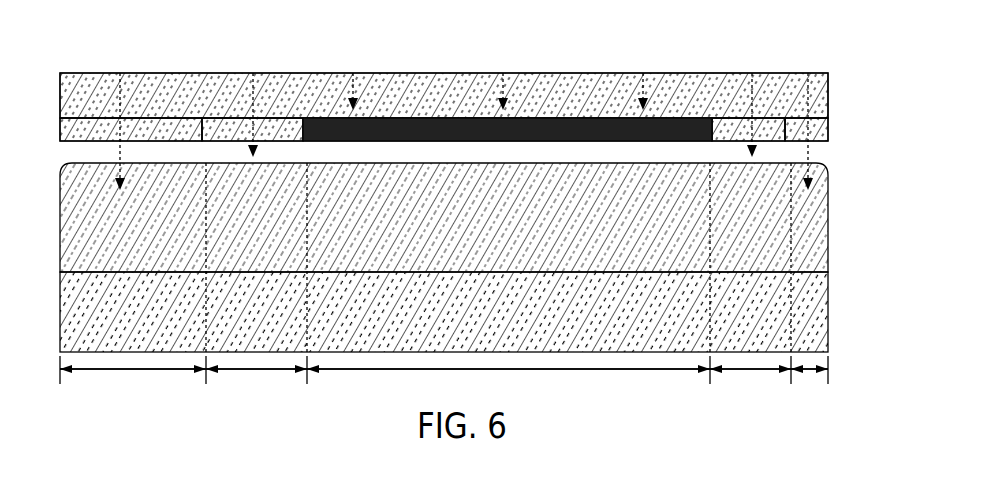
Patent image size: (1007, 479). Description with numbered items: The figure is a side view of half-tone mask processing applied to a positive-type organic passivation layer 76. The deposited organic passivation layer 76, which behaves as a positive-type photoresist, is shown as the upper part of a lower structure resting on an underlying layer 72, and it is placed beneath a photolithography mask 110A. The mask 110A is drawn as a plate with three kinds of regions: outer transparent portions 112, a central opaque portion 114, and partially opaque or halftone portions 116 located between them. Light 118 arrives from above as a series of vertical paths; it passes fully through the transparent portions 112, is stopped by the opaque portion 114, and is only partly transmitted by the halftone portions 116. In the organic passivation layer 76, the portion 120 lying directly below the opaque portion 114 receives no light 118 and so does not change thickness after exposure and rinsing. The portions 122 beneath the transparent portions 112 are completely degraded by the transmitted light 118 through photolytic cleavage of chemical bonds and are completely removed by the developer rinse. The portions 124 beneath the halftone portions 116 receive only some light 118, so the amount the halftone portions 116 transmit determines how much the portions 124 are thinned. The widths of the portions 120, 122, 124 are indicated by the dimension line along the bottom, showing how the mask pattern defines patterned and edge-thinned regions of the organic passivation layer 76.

The photolithography mask 110A is at (565, 73).
The transparent portions 112 is at (88, 130).
The opaque portion 114 is at (437, 118).
The partially opaque portions 116 is at (227, 130).
The light 118 is at (121, 72).
The organic passivation layer 76 is at (828, 213).
The lower substrate layer 72 is at (828, 322).
The portion of the organic passivation layer 120 is at (545, 370).
The portions of the organic passivation layer 122 is at (125, 370).
The portions of the organic layer 124 is at (232, 370).